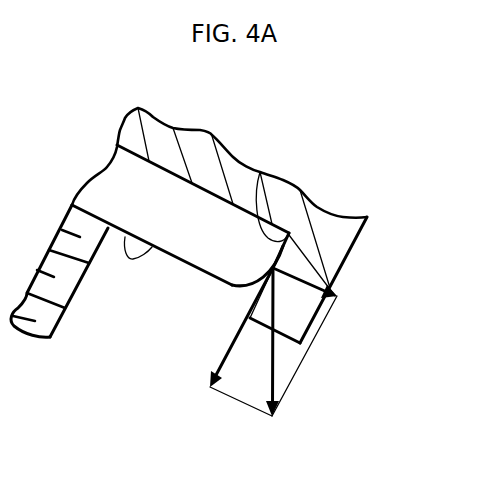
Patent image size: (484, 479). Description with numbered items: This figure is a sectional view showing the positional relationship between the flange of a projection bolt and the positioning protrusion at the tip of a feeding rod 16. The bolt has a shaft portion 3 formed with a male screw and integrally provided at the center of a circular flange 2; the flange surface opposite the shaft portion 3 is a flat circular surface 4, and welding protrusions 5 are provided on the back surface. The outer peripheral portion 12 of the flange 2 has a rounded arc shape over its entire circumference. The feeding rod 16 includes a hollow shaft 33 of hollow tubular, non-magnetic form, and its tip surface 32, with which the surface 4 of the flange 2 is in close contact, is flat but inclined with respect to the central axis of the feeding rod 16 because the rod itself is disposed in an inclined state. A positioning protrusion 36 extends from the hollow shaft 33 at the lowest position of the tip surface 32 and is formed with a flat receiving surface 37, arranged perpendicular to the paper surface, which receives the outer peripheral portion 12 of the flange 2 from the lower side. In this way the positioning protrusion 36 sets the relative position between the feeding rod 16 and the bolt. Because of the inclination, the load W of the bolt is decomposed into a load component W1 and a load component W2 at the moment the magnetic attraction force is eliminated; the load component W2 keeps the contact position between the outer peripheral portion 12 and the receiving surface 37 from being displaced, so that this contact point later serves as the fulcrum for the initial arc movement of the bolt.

The circular flange 2 is at (177, 258).
The shaft portion 3 is at (77, 288).
The flat circular surface 4 is at (128, 150).
The welding protrusion 5 is at (128, 256).
The outer peripheral portion 12 is at (250, 290).
The feeding rod 16 is at (353, 255).
The tip surface 32 is at (159, 165).
The hollow shaft 33 is at (323, 228).
The positioning protrusion 36 is at (292, 318).
The receiving surface 37 is at (260, 190).
The load W is at (273, 356).
The load component W1 is at (231, 342).
The load component W2 is at (319, 342).